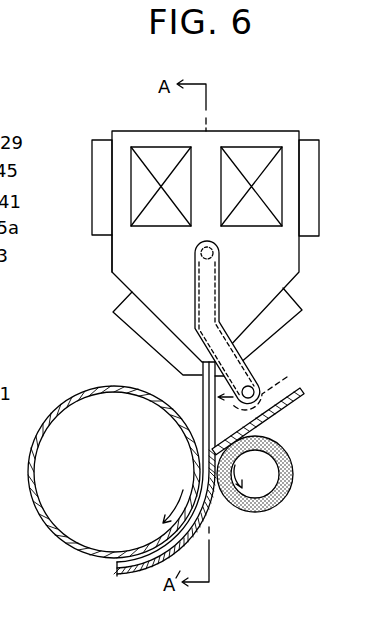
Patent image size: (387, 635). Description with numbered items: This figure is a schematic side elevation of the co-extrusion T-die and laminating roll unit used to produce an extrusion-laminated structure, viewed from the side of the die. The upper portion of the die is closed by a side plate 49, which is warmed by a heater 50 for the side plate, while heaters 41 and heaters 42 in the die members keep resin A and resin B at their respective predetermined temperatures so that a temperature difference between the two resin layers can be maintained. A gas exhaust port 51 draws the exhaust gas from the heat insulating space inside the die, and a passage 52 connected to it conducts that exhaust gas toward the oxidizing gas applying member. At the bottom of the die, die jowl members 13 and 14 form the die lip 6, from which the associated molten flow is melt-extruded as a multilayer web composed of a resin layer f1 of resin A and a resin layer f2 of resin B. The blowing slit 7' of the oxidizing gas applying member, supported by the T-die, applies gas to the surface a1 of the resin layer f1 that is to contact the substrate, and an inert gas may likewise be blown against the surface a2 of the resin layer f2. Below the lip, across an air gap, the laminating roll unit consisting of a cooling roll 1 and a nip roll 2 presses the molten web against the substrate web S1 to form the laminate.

The cooling roll 1 is at (60, 540).
The nip roll 2 is at (272, 506).
The die lip 6 is at (183, 378).
The blowing slit 7' is at (258, 404).
The die jowl member 13 is at (290, 322).
The die jowl member 14 is at (127, 320).
The heaters 41 is at (311, 147).
The heaters 42 is at (93, 160).
The side plate 49 is at (113, 257).
The heater for the side plate 50 is at (181, 149).
The gas exhaust port 51 is at (218, 252).
The passage 52 is at (218, 292).
The surface of the resin layer f1 a1 is at (215, 407).
The surface of the resin layer f2 a2 is at (202, 412).
The resin layer f1 is at (202, 454).
The resin layer f2 is at (196, 448).
The substrate web S1 is at (284, 404).